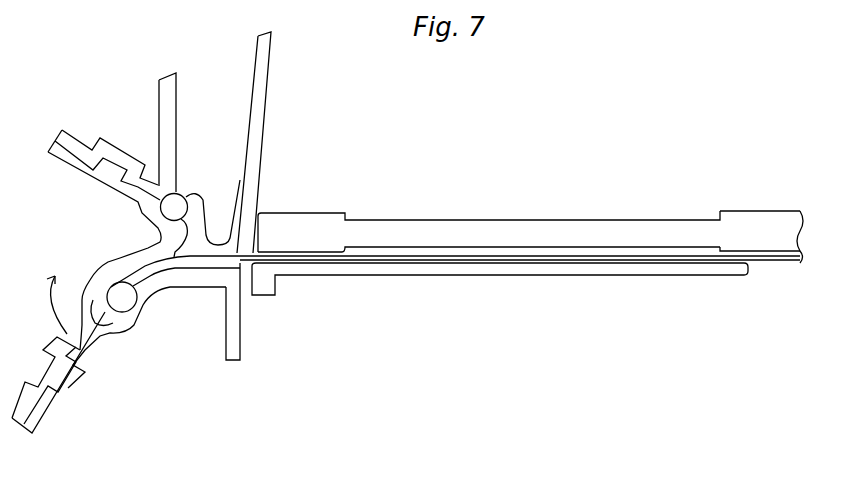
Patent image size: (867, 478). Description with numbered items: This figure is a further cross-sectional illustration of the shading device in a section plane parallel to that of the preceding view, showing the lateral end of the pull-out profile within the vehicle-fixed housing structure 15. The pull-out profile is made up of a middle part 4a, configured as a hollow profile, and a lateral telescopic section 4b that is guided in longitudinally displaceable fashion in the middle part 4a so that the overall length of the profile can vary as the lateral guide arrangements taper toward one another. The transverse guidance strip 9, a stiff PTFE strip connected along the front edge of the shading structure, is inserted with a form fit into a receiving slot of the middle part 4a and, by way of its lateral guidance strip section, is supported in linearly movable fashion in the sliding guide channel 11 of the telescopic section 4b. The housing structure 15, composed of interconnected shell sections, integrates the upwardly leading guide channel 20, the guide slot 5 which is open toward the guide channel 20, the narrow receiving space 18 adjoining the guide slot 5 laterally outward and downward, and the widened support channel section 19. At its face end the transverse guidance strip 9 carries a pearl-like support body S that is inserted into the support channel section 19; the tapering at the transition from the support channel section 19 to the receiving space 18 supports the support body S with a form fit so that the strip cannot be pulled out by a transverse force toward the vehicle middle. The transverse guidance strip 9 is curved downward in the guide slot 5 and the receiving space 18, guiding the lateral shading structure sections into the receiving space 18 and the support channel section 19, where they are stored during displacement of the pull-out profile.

The housing structure 15 is at (237, 117).
The guide channel 20 is at (176, 203).
The support channel section 19 is at (122, 323).
The support body S is at (118, 292).
The sliding guide channel 11 is at (424, 263).
The transverse guidance strip 9 is at (527, 254).
The guide slot 5 is at (222, 263).
The receiving space 18 is at (194, 264).
The telescopic section 4b is at (363, 223).
The middle part 4a is at (740, 209).